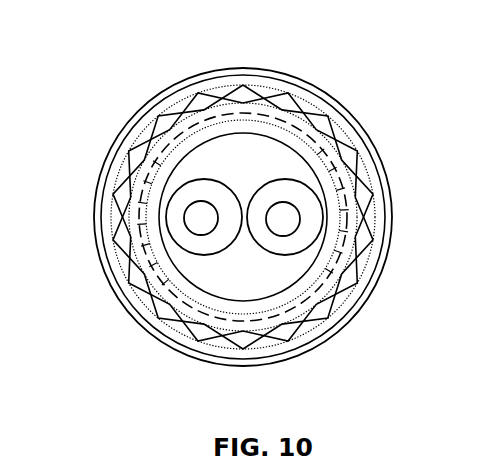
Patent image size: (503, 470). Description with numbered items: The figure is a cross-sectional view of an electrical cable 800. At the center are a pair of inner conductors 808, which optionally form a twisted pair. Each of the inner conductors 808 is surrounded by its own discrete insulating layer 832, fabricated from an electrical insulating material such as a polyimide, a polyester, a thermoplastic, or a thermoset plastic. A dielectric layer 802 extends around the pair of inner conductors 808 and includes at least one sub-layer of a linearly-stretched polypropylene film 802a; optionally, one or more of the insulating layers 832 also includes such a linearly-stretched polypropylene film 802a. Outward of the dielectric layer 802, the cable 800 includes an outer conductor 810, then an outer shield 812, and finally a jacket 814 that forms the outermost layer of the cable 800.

The electrical cable 800 is at (250, 209).
The dielectric layer 802 is at (212, 124).
The linearly-stretched polypropylene film 802a is at (200, 142).
The inner conductor 808 is at (183, 226).
The outer conductor 810 is at (363, 207).
The outer shield 812 is at (371, 269).
The jacket 814 is at (368, 305).
The insulating layer 832 is at (177, 200).